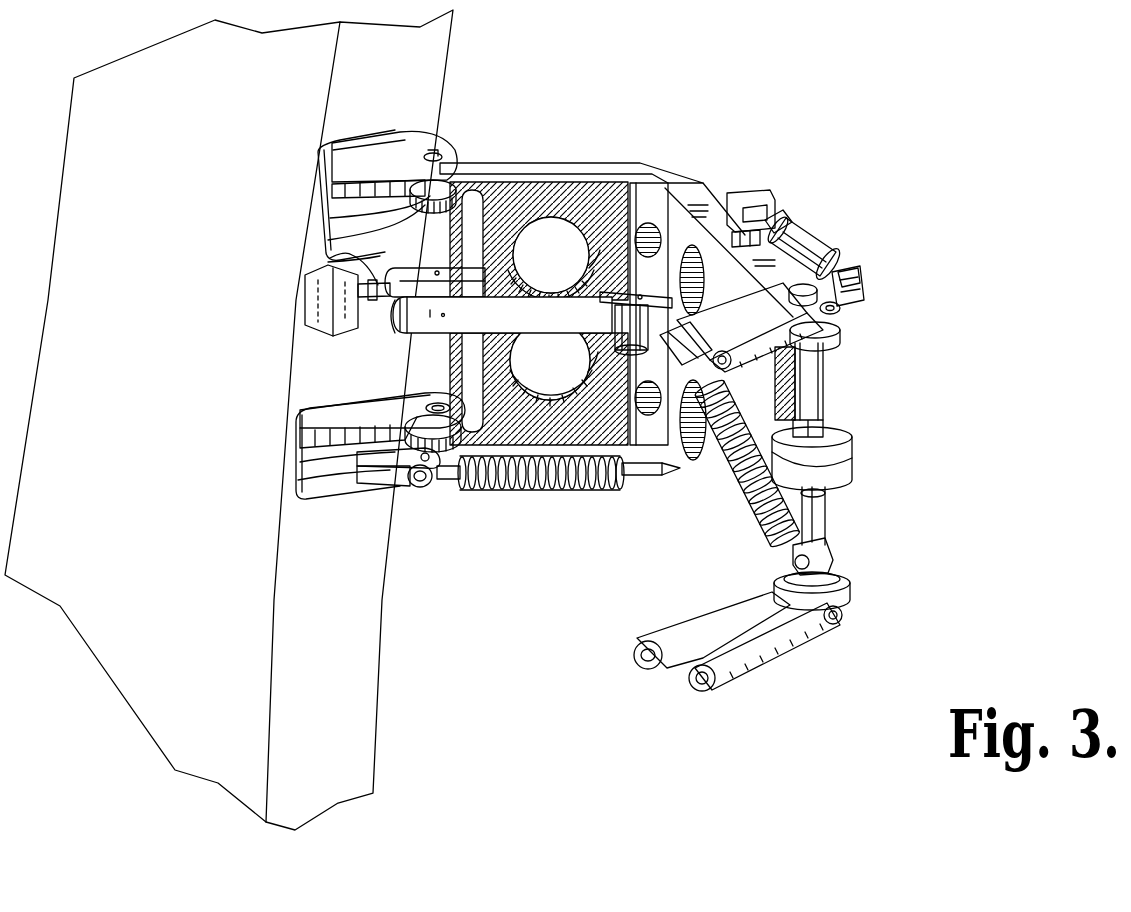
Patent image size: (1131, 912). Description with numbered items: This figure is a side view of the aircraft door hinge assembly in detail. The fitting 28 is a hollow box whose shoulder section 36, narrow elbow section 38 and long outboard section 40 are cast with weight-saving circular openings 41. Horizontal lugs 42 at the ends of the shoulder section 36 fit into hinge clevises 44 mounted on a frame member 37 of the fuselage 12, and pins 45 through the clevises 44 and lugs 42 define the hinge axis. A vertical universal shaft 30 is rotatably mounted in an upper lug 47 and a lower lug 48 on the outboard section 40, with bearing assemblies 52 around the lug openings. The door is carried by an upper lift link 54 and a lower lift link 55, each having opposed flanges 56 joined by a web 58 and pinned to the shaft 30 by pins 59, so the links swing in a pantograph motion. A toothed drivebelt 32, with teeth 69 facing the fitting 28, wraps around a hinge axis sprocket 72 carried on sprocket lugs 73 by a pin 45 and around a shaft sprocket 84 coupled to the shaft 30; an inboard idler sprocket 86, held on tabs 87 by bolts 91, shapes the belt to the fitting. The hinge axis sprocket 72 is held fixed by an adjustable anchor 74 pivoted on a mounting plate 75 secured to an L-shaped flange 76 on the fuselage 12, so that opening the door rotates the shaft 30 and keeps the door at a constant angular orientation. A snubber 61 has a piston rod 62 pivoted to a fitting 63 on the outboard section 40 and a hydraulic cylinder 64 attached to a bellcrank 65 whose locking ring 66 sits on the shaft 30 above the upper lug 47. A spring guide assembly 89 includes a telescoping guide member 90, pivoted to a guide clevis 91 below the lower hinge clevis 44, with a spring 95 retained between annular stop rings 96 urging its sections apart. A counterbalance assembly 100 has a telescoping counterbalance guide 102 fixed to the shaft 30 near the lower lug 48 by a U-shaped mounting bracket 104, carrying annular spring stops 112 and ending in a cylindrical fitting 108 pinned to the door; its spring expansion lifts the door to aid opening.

The fuselage 12 is at (124, 400).
The frame member 37 is at (322, 596).
The hinge clevises 44 is at (425, 150).
The pins 45 is at (436, 155).
The lugs 42 is at (467, 183).
The adjustable anchor 74 is at (380, 290).
The L-shaped flange 76 is at (300, 290).
The mounting plate 75 is at (345, 268).
The sprocket lugs 73 is at (458, 268).
The shoulder section 36 is at (565, 216).
The teeth 69 is at (548, 285).
The tabs 87 is at (598, 285).
The circular openings 41 is at (570, 225).
The fitting 28 is at (560, 432).
The cylindrical fitting 108 is at (587, 378).
The drivebelt 32 is at (535, 332).
The hinge axis sprocket 72 is at (388, 320).
The elbow section 38 is at (664, 217).
The outboard section 40 is at (680, 195).
The upper lift link 54 is at (745, 282).
The bolts 91 is at (640, 296).
The inboard idler sprocket 86 is at (635, 330).
The web 58 is at (712, 318).
The fitting 63 is at (745, 190).
The piston rod 62 is at (782, 210).
The snubber 61 is at (810, 215).
The hydraulic cylinder 64 is at (822, 240).
The locking ring 66 is at (848, 258).
The bellcrank 65 is at (862, 282).
The pins 59 is at (850, 300).
The upper lug 47 is at (840, 332).
The universal shaft 30 is at (832, 387).
The flanges 56 is at (842, 362).
The shaft sprocket 84 is at (850, 437).
The counterbalance assembly 100 is at (852, 472).
The counterbalance guide 102 is at (828, 512).
The U-shaped mounting bracket 104 is at (835, 548).
The annular spring stops 112 is at (770, 540).
The bearing assemblies 52 is at (840, 576).
The lower lug 48 is at (848, 592).
The lower lift link 55 is at (700, 617).
The spring guide assembly 89 is at (700, 500).
The guide member 90 is at (530, 490).
The spring 95 is at (585, 490).
The annular stop rings 96 is at (452, 490).